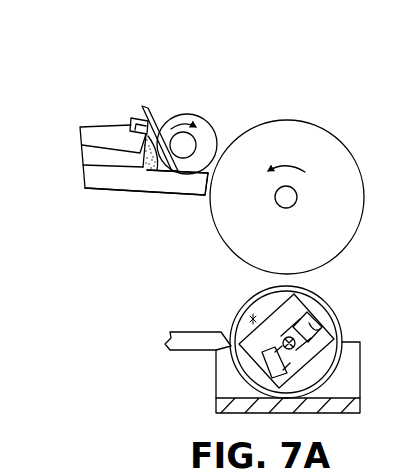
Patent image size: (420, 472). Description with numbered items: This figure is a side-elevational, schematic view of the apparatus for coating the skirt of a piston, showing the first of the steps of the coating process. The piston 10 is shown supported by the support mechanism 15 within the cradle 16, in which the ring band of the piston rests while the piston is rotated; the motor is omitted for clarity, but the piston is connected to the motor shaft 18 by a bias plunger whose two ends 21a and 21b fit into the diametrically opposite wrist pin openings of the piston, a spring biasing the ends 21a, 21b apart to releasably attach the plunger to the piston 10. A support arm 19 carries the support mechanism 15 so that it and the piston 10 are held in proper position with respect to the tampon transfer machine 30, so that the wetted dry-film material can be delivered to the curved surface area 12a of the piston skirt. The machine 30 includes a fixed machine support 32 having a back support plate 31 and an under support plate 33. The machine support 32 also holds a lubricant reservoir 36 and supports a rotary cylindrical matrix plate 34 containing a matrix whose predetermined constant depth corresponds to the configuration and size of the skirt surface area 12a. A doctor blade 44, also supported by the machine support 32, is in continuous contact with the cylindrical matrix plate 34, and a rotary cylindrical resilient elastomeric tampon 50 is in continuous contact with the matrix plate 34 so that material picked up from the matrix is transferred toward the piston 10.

The piston 10 is at (266, 329).
The curved surface area of piston skirt 12a is at (246, 306).
The support mechanism 15 is at (365, 405).
The cradle 16 is at (358, 371).
The motor shaft 18 is at (347, 357).
The support arm 19 is at (165, 340).
The plunger end 21a is at (300, 340).
The plunger end 21b is at (262, 343).
The tampon transfer machine 30 is at (231, 82).
The back support plate 31 is at (90, 127).
The fixed machine support 32 is at (116, 120).
The under support plate 33 is at (107, 183).
The rotary cylindrical matrix plate 34 is at (185, 113).
The lubricant reservoir 36 is at (148, 172).
The doctor blade 44 is at (140, 118).
The rotary cylindrical resilient elastomeric tampon 50 is at (344, 143).